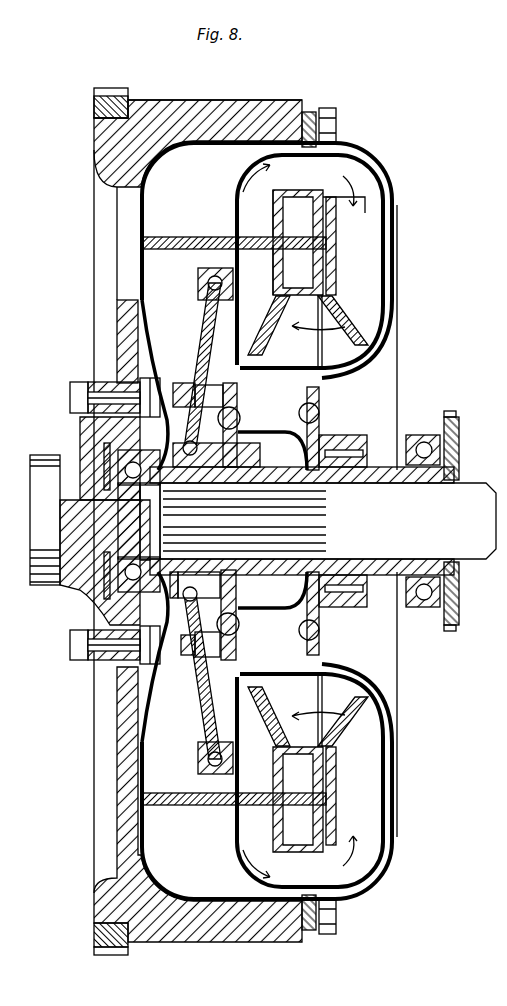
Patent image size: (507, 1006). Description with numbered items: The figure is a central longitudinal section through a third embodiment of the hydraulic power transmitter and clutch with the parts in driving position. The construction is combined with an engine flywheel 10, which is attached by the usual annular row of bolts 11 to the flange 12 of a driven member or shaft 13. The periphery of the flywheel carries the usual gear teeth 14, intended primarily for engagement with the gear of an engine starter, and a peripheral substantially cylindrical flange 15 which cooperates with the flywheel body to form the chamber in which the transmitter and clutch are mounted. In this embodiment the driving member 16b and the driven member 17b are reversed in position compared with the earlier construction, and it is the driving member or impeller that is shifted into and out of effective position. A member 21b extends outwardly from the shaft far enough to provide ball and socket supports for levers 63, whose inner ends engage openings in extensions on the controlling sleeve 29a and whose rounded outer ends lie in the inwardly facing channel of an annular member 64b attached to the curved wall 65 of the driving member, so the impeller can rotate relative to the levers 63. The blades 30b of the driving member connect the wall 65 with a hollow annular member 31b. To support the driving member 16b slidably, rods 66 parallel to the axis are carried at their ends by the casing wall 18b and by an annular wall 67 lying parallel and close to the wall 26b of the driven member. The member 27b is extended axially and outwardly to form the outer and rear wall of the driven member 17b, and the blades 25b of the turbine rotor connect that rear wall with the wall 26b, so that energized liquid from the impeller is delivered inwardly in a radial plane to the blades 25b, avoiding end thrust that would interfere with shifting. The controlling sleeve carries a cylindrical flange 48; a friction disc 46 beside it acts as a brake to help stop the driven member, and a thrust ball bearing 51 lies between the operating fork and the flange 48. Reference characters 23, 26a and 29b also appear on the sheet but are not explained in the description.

The engine flywheel 10 is at (270, 100).
The bolts 11 is at (72, 392).
The flange 12 is at (88, 665).
The driven member or shaft 13 is at (47, 590).
The gear teeth 14 is at (113, 90).
The peripheral cylindrical flange 15 is at (216, 100).
The driving member 16b is at (268, 196).
The driven member 17b is at (310, 521).
The casing wall 18b is at (140, 265).
The member 21b is at (240, 650).
The shaft 23 is at (328, 521).
The blades of the driven member 25b is at (394, 290).
The runner wall 26a is at (337, 268).
The wall of the driven member 26b is at (337, 778).
The member 27b is at (277, 430).
The controlling sleeve 29a is at (385, 521).
The cover wall 29b is at (368, 215).
The blades of the driving member 30b is at (275, 252).
The hollow annular member 31b is at (300, 190).
The friction disc 46 is at (460, 622).
The cylindrical flange 48 is at (447, 632).
The thrust ball bearing 51 is at (425, 438).
The levers 63 is at (203, 352).
The annular member 64b is at (198, 272).
The curved wall 65 is at (233, 186).
The rods 66 is at (217, 236).
The annular wall 67 is at (338, 300).